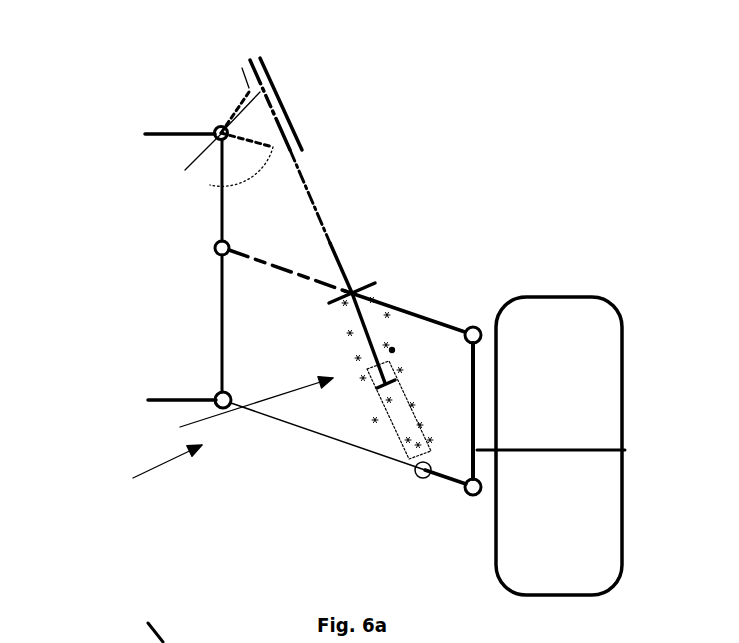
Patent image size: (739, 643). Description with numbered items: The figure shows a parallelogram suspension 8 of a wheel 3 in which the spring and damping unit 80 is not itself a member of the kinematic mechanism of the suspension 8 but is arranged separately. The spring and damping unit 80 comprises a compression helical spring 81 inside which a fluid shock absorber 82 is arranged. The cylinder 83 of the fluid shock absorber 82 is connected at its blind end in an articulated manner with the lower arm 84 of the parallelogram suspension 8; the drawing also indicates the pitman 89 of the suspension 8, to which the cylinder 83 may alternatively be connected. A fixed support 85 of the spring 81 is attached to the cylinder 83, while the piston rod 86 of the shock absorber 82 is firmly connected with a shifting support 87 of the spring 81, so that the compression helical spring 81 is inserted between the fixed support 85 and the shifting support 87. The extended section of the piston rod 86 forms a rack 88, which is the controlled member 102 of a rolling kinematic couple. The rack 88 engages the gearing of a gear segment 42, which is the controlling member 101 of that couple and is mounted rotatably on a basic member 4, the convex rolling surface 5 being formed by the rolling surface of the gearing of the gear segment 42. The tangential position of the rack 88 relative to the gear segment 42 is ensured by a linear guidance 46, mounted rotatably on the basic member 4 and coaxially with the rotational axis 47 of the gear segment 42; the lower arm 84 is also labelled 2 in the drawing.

The lower control arm 2 is at (285, 422).
The wheel 3 is at (586, 325).
The basic member 4 is at (221, 310).
The convex rolling surface 5 is at (185, 170).
The parallelogram suspension 8 is at (152, 474).
The gear segment 42 is at (123, 267).
The linear guidance 46 is at (284, 109).
The rotational axis 47 is at (221, 126).
The spring and damping unit 80 is at (242, 407).
The compression helical spring 81 is at (394, 350).
The fluid shock absorber 82 is at (403, 442).
The cylinder 83 is at (377, 388).
The lower arm 84 is at (339, 453).
The fixed support 85 is at (383, 440).
The piston rod 86 is at (397, 307).
The shifting support 87 is at (357, 283).
The rack 88 is at (410, 240).
The pitman 89 is at (473, 372).
The controlling member 101 is at (200, 157).
The controlled member 102 is at (300, 190).